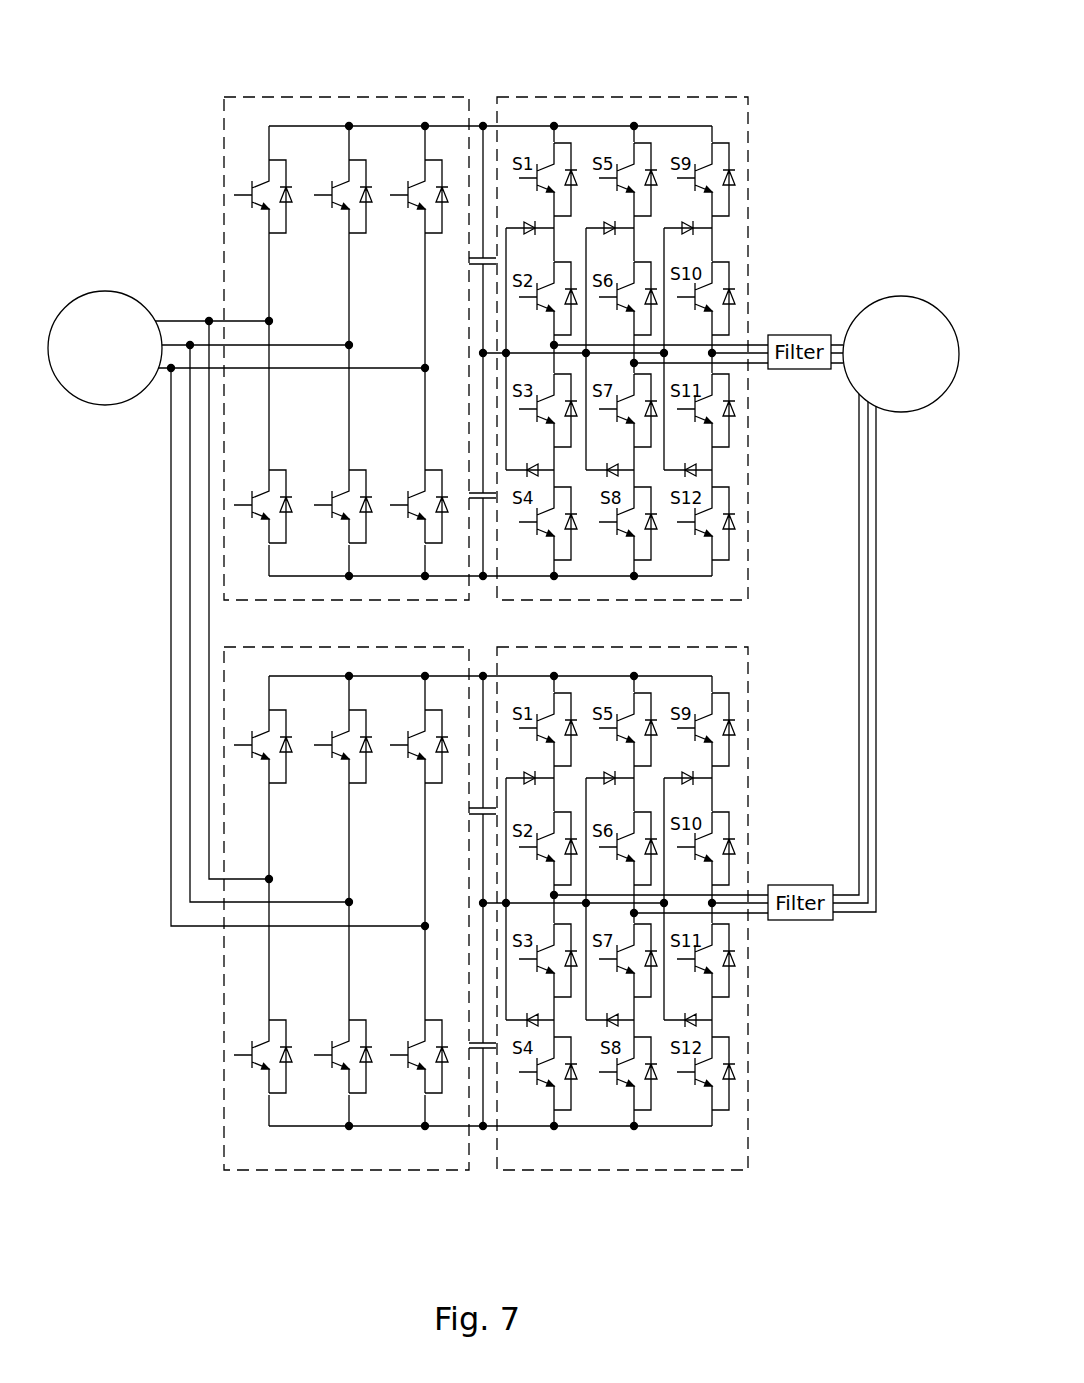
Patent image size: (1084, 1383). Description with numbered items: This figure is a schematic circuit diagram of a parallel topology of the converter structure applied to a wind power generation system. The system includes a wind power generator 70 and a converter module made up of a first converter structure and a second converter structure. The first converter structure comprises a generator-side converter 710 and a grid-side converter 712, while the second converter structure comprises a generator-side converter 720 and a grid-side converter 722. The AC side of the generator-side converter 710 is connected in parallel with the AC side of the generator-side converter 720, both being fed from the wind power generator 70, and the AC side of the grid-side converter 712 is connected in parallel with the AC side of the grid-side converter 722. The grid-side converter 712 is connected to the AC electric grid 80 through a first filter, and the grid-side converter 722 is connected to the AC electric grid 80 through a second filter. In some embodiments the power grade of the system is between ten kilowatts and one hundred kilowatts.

The wind power generator 70 is at (128, 297).
The AC electric grid 80 is at (869, 306).
The generator-side converter 710 is at (354, 95).
The grid-side converter 712 is at (634, 95).
The generator-side converter 720 is at (348, 1172).
The grid-side converter 722 is at (630, 1172).